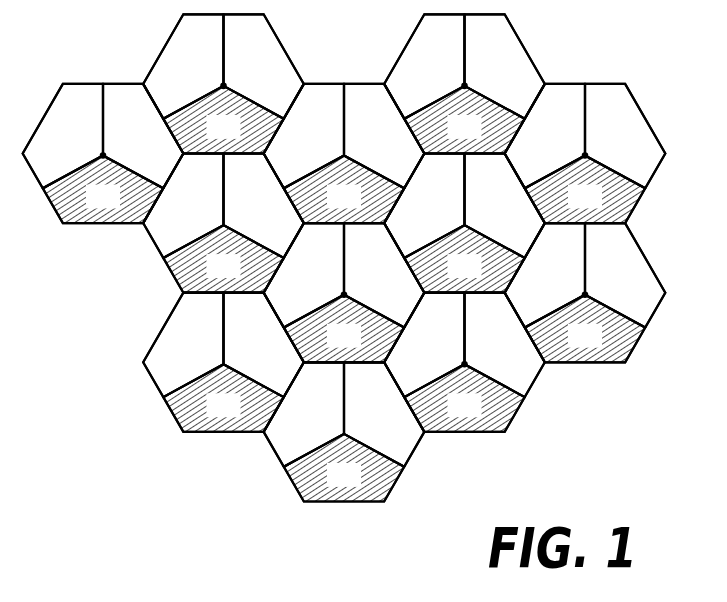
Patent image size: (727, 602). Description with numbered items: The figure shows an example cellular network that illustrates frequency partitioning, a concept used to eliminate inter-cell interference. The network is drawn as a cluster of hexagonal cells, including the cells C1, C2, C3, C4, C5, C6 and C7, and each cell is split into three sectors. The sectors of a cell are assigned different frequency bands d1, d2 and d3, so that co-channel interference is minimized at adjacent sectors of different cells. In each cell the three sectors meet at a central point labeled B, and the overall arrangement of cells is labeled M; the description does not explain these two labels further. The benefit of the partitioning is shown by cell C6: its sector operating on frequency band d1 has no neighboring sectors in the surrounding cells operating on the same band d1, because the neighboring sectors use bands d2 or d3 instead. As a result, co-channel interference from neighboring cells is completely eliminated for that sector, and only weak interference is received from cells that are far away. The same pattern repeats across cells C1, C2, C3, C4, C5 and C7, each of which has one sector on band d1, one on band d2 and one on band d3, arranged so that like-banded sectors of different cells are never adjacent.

The mosaic of hexagonal cells M is at (356, 257).
The center junction point of cell B is at (323, 352).
The cell C1 is at (283, 302).
The cell C2 is at (157, 367).
The cell C3 is at (407, 448).
The cell C4 is at (527, 378).
The cell C5 is at (521, 231).
The cell C6 is at (330, 97).
The cell C7 is at (160, 235).
The frequency band d1 is at (344, 294).
The frequency band d2 is at (384, 240).
The frequency band d3 is at (304, 240).